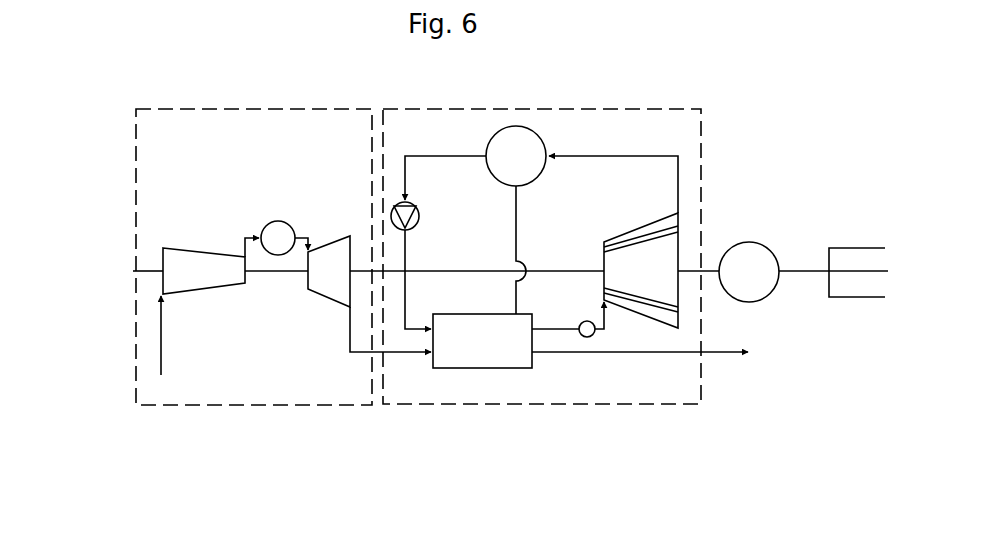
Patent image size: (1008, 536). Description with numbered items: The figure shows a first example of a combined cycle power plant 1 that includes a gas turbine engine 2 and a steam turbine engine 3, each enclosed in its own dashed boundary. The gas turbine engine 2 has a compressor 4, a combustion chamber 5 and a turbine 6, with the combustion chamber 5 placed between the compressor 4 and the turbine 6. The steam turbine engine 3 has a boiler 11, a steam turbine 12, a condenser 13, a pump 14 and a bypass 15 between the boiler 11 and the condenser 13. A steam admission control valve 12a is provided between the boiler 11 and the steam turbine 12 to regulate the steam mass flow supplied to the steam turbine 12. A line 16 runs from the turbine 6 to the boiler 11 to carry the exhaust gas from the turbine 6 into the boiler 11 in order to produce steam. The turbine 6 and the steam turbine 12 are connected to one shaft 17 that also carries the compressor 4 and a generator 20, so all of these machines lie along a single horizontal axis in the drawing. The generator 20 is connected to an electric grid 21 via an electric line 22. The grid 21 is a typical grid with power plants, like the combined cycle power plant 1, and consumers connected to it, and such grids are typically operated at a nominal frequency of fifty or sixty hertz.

The combined cycle power plant 1 is at (220, 70).
The gas turbine engine 2 is at (297, 108).
The steam turbine engine 3 is at (630, 108).
The compressor 4 is at (198, 253).
The combustion chamber 5 is at (267, 223).
The turbine 6 is at (340, 237).
The boiler 11 is at (482, 353).
The steam turbine 12 is at (621, 236).
The steam admission control valve 12a is at (592, 335).
The condenser 13 is at (515, 153).
The pump 14 is at (420, 222).
The bypass 15 is at (516, 216).
The line 16 is at (348, 323).
The shaft 17 is at (148, 270).
The generator 20 is at (752, 243).
The electric grid 21 is at (860, 240).
The electric line 22 is at (805, 272).